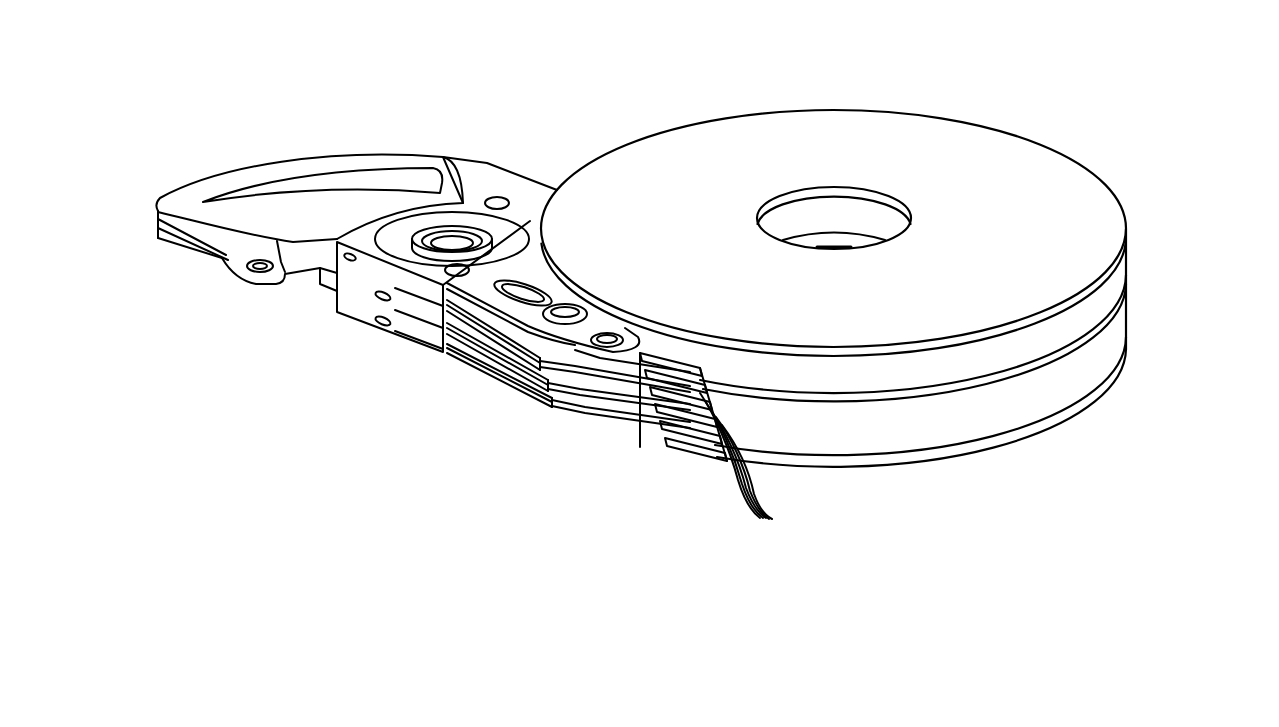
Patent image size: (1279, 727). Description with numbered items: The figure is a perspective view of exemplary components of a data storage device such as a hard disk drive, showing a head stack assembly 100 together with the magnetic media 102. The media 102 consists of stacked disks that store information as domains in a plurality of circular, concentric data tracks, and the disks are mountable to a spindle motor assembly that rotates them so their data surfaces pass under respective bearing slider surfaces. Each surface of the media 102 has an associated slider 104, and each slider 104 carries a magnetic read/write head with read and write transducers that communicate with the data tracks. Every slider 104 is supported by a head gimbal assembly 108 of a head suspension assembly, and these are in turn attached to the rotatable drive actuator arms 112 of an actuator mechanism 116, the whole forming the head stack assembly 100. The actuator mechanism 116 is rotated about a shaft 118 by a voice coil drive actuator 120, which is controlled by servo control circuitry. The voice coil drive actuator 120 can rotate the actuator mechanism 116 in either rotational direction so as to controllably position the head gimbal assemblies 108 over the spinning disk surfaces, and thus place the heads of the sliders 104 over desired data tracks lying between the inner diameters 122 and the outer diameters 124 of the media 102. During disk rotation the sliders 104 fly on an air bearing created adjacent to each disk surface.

The head stack assembly 100 is at (318, 377).
The media 102 is at (895, 279).
The slider 104 is at (747, 461).
The head gimbal assembly 108 is at (692, 365).
The drive actuator arm 112 is at (481, 335).
The actuator mechanism 116 is at (522, 177).
The shaft 118 is at (452, 242).
The voice coil drive actuator 120 is at (288, 161).
The inner diameter 122 is at (826, 240).
The outer diameter 124 is at (785, 112).